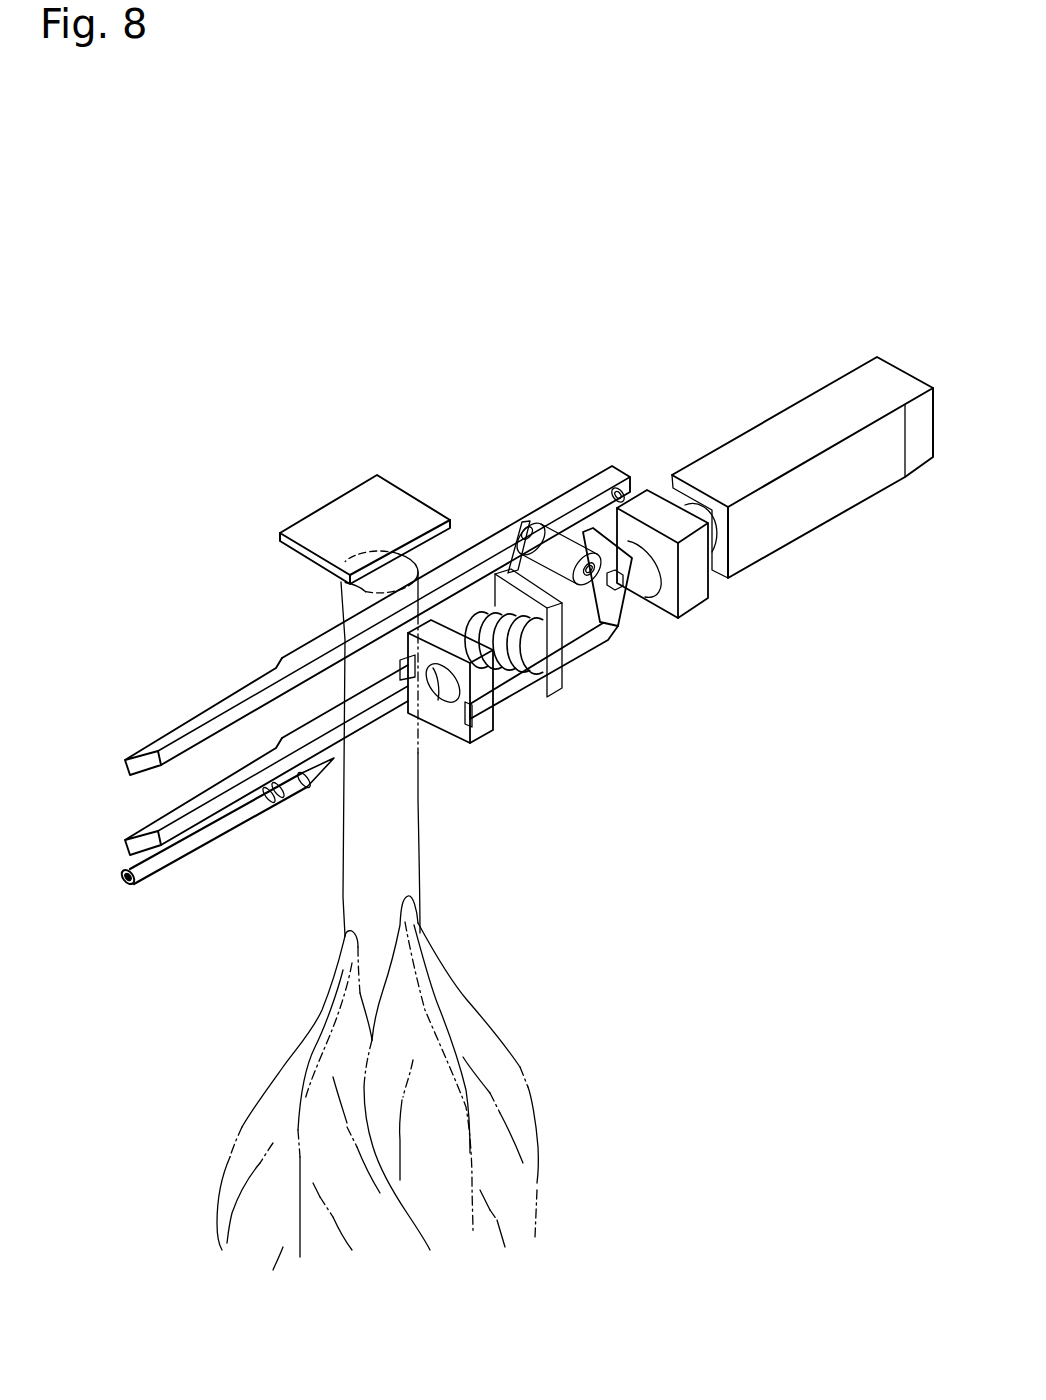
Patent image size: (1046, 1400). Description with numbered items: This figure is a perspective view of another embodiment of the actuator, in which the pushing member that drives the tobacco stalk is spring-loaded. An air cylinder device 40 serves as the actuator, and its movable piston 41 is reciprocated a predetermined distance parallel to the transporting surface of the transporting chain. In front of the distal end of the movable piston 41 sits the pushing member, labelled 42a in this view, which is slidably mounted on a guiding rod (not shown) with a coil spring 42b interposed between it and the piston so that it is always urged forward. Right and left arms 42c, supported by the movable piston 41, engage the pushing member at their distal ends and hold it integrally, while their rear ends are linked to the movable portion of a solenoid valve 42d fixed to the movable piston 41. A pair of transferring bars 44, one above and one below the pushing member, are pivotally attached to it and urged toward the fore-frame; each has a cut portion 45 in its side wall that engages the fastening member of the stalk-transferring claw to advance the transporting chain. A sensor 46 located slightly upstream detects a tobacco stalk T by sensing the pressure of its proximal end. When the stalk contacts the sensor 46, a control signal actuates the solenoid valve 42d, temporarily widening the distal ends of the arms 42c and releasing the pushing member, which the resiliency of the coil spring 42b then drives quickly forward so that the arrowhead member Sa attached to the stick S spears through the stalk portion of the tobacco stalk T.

The air cylinder device 40 is at (779, 442).
The movable piston 41 is at (650, 576).
The slide block 42a is at (438, 712).
The coil spring 42b is at (530, 673).
The right and left arms 42c is at (602, 627).
The solenoid valve 42d is at (558, 542).
The transferring bars 44 is at (332, 637).
The cut portion 45 is at (270, 667).
The sensor 46 is at (362, 508).
The stick S is at (172, 855).
The arrowhead member Sa is at (301, 798).
The tobacco stalk T is at (390, 798).